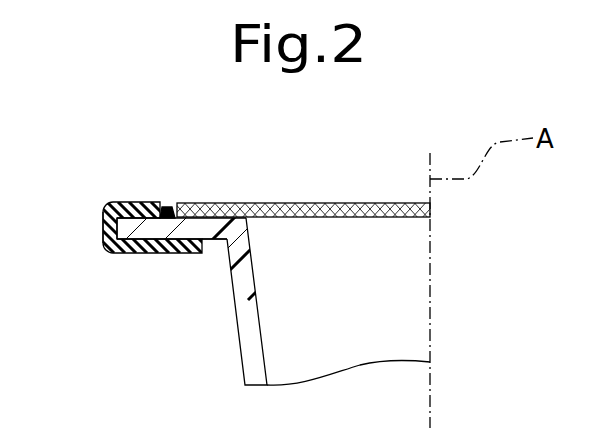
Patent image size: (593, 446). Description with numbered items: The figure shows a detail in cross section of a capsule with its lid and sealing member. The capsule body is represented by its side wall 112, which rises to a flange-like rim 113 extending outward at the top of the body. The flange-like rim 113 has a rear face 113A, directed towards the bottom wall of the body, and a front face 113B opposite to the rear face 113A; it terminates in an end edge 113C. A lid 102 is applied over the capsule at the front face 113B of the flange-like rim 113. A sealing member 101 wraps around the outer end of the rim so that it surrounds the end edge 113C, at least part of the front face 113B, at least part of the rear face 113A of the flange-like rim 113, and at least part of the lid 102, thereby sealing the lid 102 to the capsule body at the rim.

The sealing member 101 is at (110, 205).
The lid 102 is at (381, 203).
The side wall 112 is at (246, 352).
The flange-like rim 113 is at (167, 209).
The rear face 113A is at (220, 240).
The front face 113B is at (170, 209).
The end edge 113C is at (108, 232).